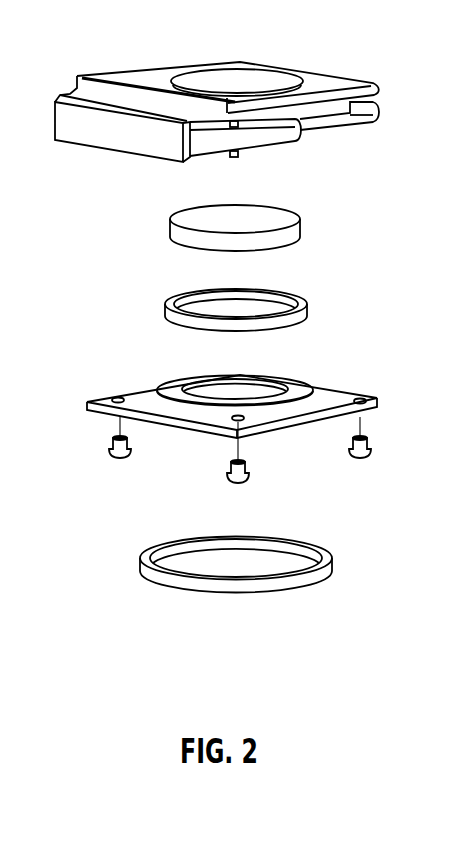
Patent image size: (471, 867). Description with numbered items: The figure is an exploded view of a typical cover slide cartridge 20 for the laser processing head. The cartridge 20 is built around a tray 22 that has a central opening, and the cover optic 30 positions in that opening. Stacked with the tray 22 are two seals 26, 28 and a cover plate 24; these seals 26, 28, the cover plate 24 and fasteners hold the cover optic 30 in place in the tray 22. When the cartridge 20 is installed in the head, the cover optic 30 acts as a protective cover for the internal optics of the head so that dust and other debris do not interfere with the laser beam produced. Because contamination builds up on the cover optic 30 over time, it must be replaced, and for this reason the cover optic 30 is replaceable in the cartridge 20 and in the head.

The cover slide cartridge 20 is at (354, 39).
The tray 22 is at (377, 88).
The cover plate 24 is at (347, 390).
The seal 26 is at (306, 312).
The seal 28 is at (312, 545).
The cover optic 30 is at (302, 227).